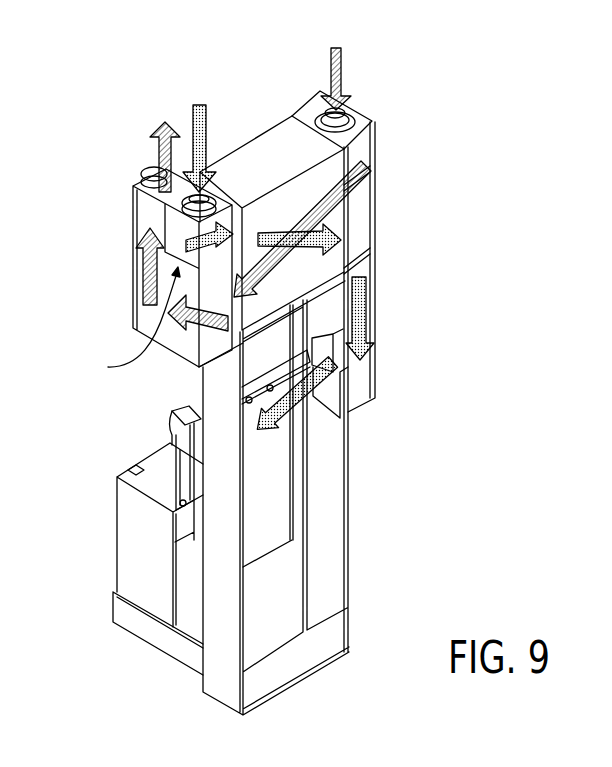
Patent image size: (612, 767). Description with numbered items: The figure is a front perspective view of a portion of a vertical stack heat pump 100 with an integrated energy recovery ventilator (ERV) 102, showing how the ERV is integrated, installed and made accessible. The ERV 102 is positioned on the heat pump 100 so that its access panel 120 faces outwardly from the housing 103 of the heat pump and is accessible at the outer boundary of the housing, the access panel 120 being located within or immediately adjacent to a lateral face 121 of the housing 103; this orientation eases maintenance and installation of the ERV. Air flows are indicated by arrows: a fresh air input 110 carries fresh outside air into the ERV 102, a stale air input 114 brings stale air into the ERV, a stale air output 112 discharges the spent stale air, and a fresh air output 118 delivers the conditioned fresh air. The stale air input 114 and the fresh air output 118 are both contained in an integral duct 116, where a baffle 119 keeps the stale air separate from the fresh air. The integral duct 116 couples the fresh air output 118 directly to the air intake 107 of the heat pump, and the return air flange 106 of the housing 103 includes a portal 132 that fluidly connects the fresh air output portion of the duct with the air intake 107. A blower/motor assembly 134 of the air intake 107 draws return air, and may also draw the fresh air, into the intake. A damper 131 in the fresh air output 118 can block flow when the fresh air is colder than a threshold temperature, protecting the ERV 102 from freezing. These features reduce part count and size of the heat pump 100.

The heat pump 100 is at (397, 62).
The energy recovery ventilator (ERV) 102 is at (253, 163).
The housing 103 is at (115, 655).
The return air flange 106 is at (330, 575).
The air intake 107 is at (280, 492).
The fresh air input 110 is at (123, 324).
The stale air output 112 is at (150, 218).
The stale air input 114 is at (363, 149).
The integral duct 116 is at (417, 179).
The fresh air output 118 is at (362, 270).
The baffle 119 is at (358, 178).
The access panel 120 is at (308, 185).
The lateral face 121 is at (293, 581).
The damper 131 is at (320, 333).
The portal 132 is at (333, 346).
The blower/motor assembly 134 is at (158, 469).